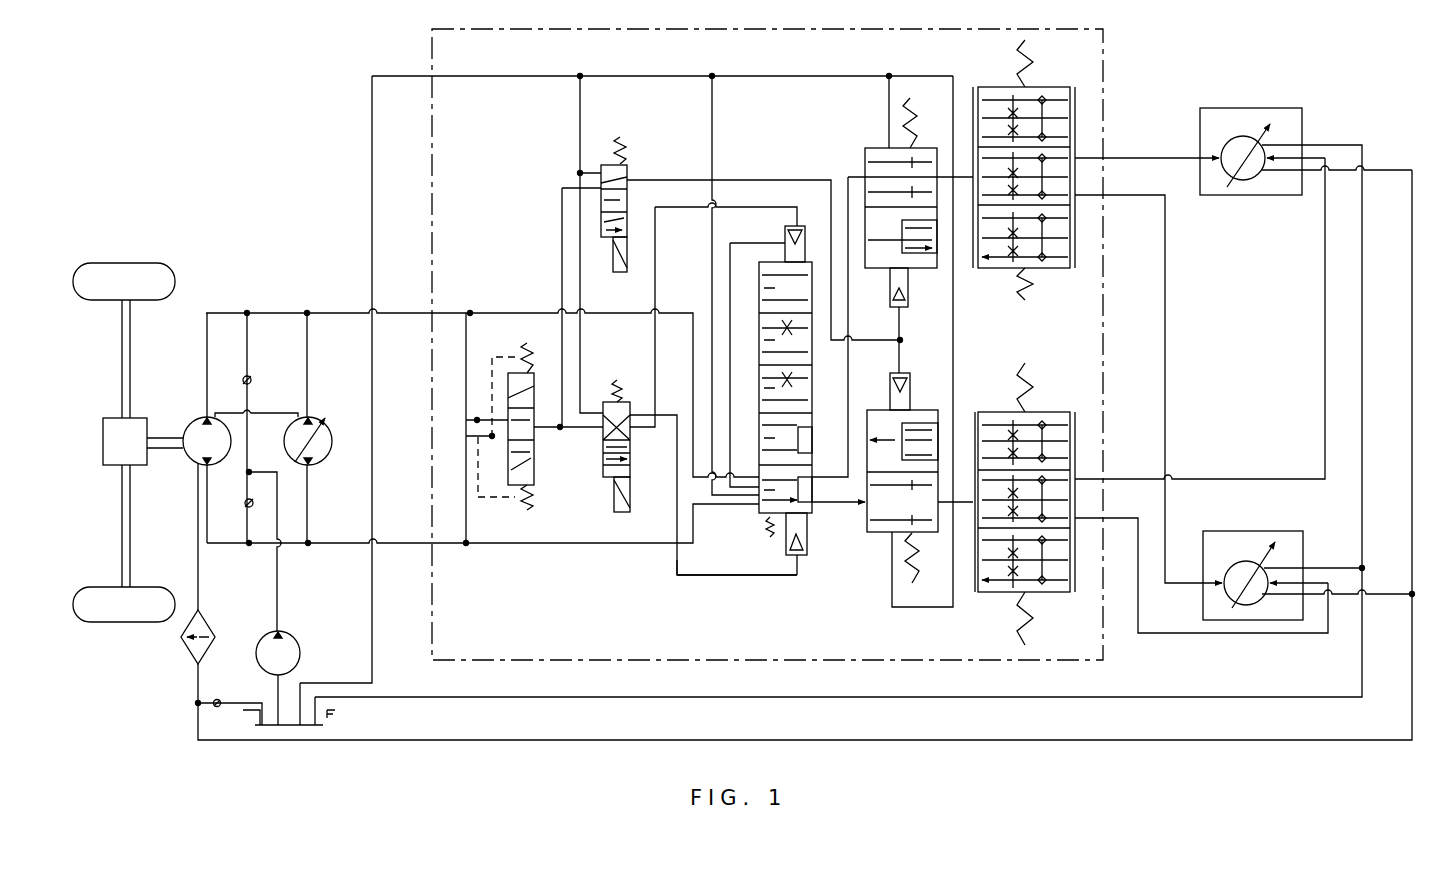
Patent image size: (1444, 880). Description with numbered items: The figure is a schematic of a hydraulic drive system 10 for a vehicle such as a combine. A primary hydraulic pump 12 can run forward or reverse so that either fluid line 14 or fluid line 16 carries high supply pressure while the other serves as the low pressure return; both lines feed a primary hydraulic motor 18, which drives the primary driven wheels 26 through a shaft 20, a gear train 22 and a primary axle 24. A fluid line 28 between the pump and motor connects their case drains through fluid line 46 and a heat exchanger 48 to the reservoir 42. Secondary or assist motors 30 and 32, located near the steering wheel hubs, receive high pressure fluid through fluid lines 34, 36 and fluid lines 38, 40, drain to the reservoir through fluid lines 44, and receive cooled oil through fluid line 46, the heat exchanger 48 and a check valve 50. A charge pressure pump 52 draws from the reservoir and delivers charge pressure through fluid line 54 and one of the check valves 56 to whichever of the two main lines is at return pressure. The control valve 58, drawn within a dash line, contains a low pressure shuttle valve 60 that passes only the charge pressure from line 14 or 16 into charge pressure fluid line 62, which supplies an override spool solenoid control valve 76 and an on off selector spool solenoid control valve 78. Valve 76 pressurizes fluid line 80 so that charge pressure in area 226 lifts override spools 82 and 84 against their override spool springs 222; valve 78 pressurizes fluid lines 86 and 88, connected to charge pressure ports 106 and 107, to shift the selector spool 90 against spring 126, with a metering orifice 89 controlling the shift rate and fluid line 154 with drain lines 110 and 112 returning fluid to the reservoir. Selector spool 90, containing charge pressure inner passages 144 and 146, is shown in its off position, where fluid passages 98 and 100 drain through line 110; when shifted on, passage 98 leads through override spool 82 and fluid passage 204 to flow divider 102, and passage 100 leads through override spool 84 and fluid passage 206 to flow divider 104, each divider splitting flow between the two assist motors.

The hydraulic drive system 10 is at (246, 106).
The primary hydraulic pump 12 is at (326, 428).
The fluid line 14 is at (330, 313).
The fluid line 16 is at (340, 545).
The primary hydraulic motor 18 is at (190, 420).
The shaft 20 is at (170, 449).
The gear train 22 is at (106, 462).
The primary axle 24 is at (131, 336).
The primary driven wheels 26 is at (143, 263).
The fluid line 28 is at (272, 412).
The secondary hydraulic motor 30 is at (1272, 108).
The secondary hydraulic motor 32 is at (1265, 557).
The fluid line 34 is at (1150, 156).
The fluid line 36 is at (1322, 330).
The fluid line 38 is at (1168, 410).
The fluid line 40 is at (1225, 640).
The reservoir 42 is at (340, 713).
The fluid lines 44 is at (1363, 338).
The fluid line 46 is at (197, 536).
The heat exchanger 48 is at (184, 658).
The check valve 50 is at (220, 700).
The charge pressure pump 52 is at (298, 640).
The fluid line 54 is at (276, 584).
The check valves 56 is at (250, 378).
The control valve 58 is at (936, 29).
The low pressure shuttle valve 60 is at (536, 463).
The charge pressure fluid line 62 is at (560, 196).
The override spool solenoid control valve 76 is at (630, 168).
The on off selector spool solenoid control valve 78 is at (634, 460).
The fluid line 80 is at (775, 180).
The override spool 82 is at (862, 158).
The override spool 84 is at (870, 533).
The fluid line 86 is at (655, 340).
The fluid line 88 is at (677, 562).
The metering orifice 89 is at (730, 586).
The selector spool 90 is at (756, 516).
The fluid passage 98 is at (849, 382).
The fluid passage 100 is at (850, 506).
The flow divider 102 is at (1050, 86).
The flow divider 104 is at (995, 596).
The charge pressure port 106 is at (786, 238).
The charge pressure port 107 is at (812, 552).
The fluid line 110 is at (712, 252).
The fluid line 112 is at (372, 168).
The spring 126 is at (765, 541).
The first charge pressure inner passage 144 is at (730, 215).
The second charge pressure inner passage 146 is at (768, 332).
The fluid line 154 is at (581, 292).
The fluid passage 204 is at (950, 177).
The fluid passage 206 is at (965, 500).
The override spool spring 222 is at (914, 120).
The area 226 is at (912, 296).